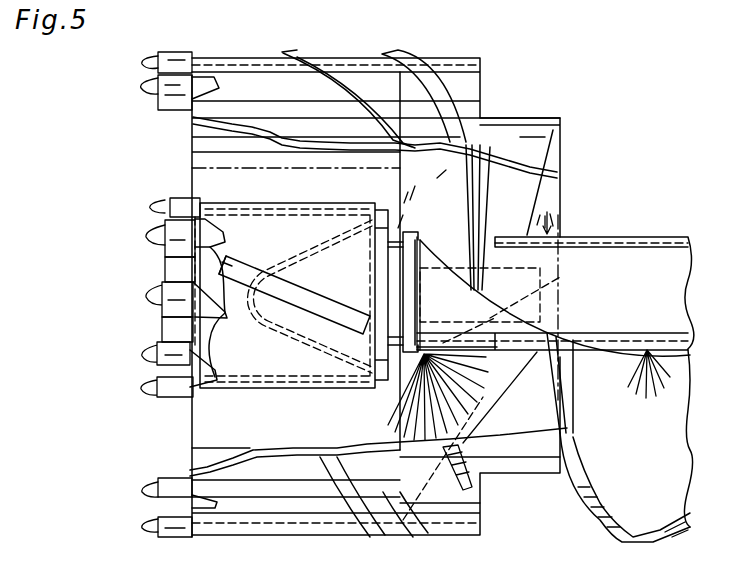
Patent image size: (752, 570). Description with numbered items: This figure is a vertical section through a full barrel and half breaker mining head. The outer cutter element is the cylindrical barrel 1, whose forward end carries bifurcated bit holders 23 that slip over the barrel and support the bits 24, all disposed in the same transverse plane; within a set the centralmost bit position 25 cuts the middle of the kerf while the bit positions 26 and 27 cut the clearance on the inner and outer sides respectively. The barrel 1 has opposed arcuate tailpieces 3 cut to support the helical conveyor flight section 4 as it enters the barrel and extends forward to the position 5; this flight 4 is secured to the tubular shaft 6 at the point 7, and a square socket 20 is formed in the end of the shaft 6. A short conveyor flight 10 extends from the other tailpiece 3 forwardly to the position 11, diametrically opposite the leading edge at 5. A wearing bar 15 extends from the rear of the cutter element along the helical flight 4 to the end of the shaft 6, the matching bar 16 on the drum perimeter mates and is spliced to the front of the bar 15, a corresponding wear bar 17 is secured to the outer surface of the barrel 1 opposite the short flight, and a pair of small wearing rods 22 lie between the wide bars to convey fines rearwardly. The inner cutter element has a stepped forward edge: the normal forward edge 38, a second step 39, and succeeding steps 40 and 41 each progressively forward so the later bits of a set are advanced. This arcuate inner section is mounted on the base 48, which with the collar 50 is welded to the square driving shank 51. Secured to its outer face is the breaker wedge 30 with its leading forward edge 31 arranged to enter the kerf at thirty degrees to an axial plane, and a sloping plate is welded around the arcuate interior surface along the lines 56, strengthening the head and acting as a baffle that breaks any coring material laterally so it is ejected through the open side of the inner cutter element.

The outer cylindrical cutter element 1 is at (334, 56).
The arcuate tailpiece 3 is at (523, 114).
The helical conveyor flight section 4 is at (668, 423).
The forward position of conveyor flight 5 is at (400, 185).
The tubular shaft 6 is at (666, 280).
The securing point of flight to shaft 7 is at (547, 327).
The short conveyor flight 10 is at (573, 179).
The forward position of short flight 11 is at (400, 420).
The wearing bar 15 is at (617, 527).
The matching bar 16 is at (462, 106).
The wear bar 17 is at (333, 475).
The square socket 20 is at (490, 291).
The small wearing rod 22 is at (290, 28).
The bit holder 23 is at (170, 83).
The bit 24 is at (142, 87).
The centralmost bit position 25 is at (148, 298).
The inner clearance bit position 26 is at (157, 207).
The outer clearance bit position 27 is at (153, 238).
The breaker wedge 30 is at (307, 297).
The leading forward edge of breaker wedge 31 is at (225, 258).
The normal forward edge 38 is at (196, 212).
The second step 39 is at (197, 213).
The third step 40 is at (190, 268).
The fourth step 41 is at (190, 330).
The base 48 is at (382, 223).
The collar 50 is at (405, 245).
The square driving shank 51 is at (506, 262).
The weld lines 56 is at (257, 323).